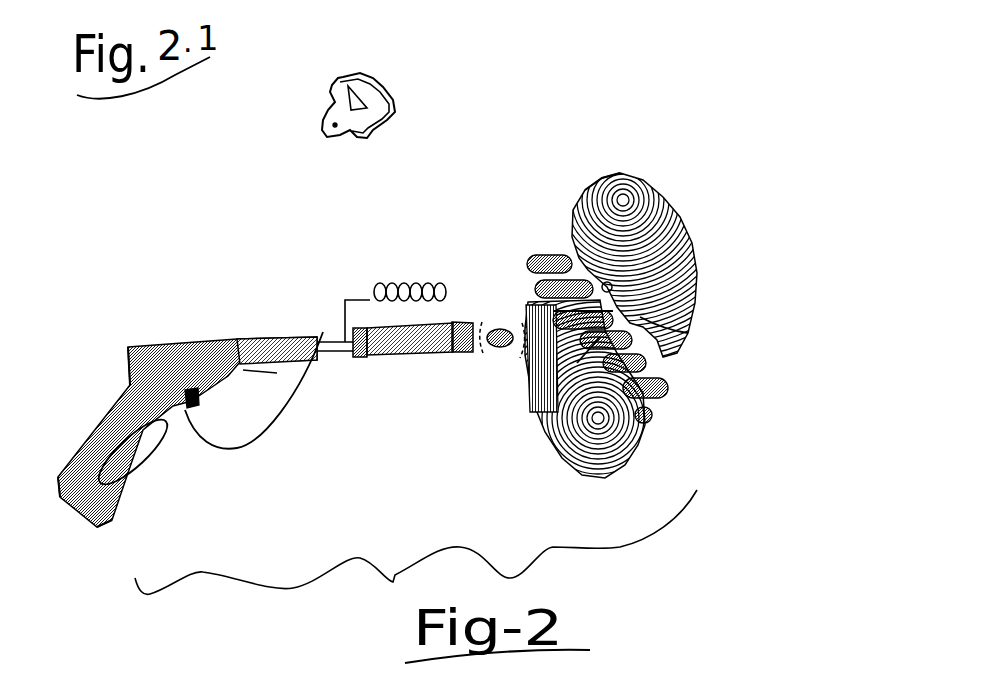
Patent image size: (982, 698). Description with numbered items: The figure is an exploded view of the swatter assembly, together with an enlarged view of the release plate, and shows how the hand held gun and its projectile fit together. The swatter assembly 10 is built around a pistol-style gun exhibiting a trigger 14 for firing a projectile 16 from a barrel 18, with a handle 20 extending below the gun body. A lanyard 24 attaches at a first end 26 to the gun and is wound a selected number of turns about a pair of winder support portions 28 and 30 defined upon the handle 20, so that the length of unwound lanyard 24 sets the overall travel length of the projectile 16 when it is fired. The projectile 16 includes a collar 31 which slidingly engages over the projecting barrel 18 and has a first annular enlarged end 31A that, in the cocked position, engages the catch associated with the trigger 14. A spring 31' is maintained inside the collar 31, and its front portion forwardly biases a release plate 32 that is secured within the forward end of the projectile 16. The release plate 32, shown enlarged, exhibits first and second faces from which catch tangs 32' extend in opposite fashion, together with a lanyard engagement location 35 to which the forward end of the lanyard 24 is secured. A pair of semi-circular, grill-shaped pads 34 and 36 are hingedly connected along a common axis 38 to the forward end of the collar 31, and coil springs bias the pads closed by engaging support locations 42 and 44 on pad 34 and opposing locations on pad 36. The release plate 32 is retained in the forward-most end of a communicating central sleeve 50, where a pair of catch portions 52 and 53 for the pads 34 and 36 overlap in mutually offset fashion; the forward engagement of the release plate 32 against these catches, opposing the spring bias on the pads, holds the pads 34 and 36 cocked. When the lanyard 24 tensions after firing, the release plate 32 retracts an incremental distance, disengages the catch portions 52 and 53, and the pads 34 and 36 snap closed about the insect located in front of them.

In FIG. 2, the hand tool assembly 10 is at (212, 303).
In FIG. 2, the trigger 14 is at (202, 400).
In FIG. 2, the projectile 16 is at (534, 212).
In FIG. 2, the barrel 18 is at (325, 340).
In FIG. 2, the handle 20 is at (93, 445).
In FIG. 2, the lanyard 24 is at (250, 447).
In FIG. 2, the first end 26 is at (114, 518).
In FIG. 2, the winder support portion 28 is at (95, 472).
In FIG. 2, the winder support portion 30 is at (147, 407).
In FIG. 2, the collar 31 is at (420, 381).
In FIG. 2, the first annular enlarged end 31A is at (357, 343).
In FIG. 2, the spring 31' is at (381, 255).
In FIG. 2.1, the release plate 32 is at (393, 80).
In FIG. 2, the release plate 32 is at (496, 307).
In FIG. 2.1, the catch tangs 32' is at (321, 81).
In FIG. 2, the pad 34 is at (667, 243).
In FIG. 2.1, the lanyard engagement location 35 is at (325, 143).
In FIG. 2, the pad 36 is at (570, 443).
In FIG. 2, the common axis 38 is at (637, 317).
In FIG. 2, the support location 42 is at (595, 183).
In FIG. 2, the support location 44 is at (640, 317).
In FIG. 2, the central sleeve 50 is at (570, 352).
In FIG. 2, the catch portion 52 is at (607, 287).
In FIG. 2, the catch portion 53 is at (577, 363).